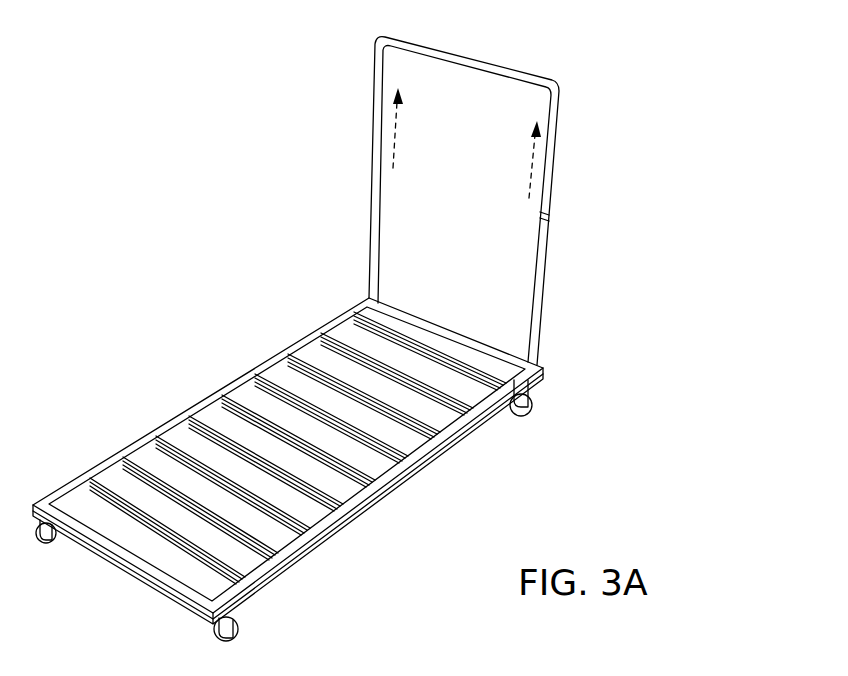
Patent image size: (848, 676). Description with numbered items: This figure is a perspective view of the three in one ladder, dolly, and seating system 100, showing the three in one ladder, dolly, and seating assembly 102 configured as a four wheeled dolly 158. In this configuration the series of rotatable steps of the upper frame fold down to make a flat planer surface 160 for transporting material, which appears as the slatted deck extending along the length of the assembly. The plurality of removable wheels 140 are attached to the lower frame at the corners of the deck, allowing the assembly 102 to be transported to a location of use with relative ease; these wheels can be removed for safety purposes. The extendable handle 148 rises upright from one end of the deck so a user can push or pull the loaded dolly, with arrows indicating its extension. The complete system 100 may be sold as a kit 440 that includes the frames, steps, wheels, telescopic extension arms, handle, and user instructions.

The 3 in 1 ladder, dolly, and seating system 100 is at (620, 98).
The 3 in 1 ladder, dolly, and seating assembly 102 is at (636, 130).
The plurality of removable wheels 140 is at (546, 407).
The extendable handle 148 is at (360, 121).
The four wheeled dolly 158 is at (659, 162).
The flat planer surface 160 is at (252, 388).
The kit 440 is at (678, 200).